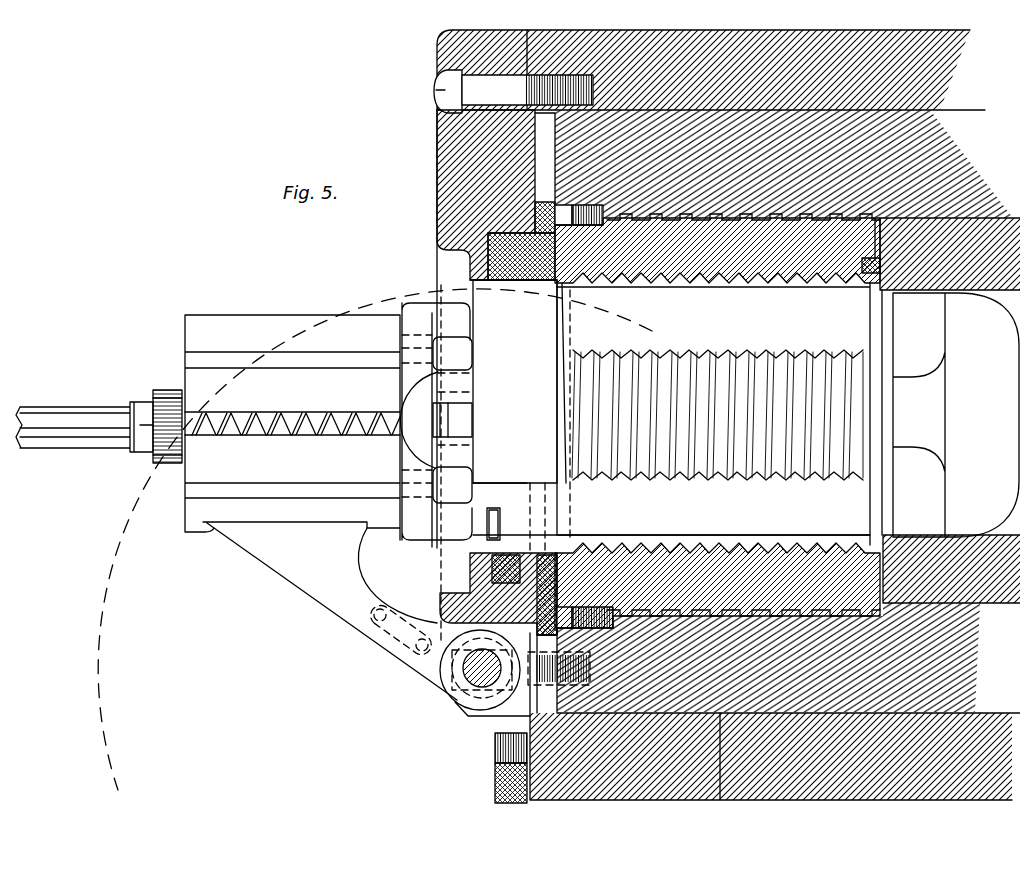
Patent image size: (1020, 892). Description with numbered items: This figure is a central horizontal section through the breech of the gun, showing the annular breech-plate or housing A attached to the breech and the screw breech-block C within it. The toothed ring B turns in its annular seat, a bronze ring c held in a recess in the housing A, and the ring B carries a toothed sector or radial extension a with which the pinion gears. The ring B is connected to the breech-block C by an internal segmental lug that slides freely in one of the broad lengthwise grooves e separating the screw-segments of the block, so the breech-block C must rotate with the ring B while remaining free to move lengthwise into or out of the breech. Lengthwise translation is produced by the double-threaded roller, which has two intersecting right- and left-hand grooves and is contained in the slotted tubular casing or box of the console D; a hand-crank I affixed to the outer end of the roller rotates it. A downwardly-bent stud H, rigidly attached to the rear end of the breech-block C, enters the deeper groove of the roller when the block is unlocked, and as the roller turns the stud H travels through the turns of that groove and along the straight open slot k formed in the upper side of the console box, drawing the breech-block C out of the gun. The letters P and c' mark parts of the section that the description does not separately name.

The annular breech-plate or housing A is at (437, 160).
The toothed ring B is at (531, 285).
The screw breech-block C is at (671, 416).
The console D is at (387, 500).
The downwardly-bent stud H is at (436, 420).
The hand-crank I is at (162, 395).
The plug P is at (956, 415).
The toothed sector or radial extension a is at (296, 424).
The bronze ring c is at (511, 405).
The screw thread c' is at (717, 415).
The lengthwise grooves e is at (719, 414).
The straight open slot k is at (328, 435).